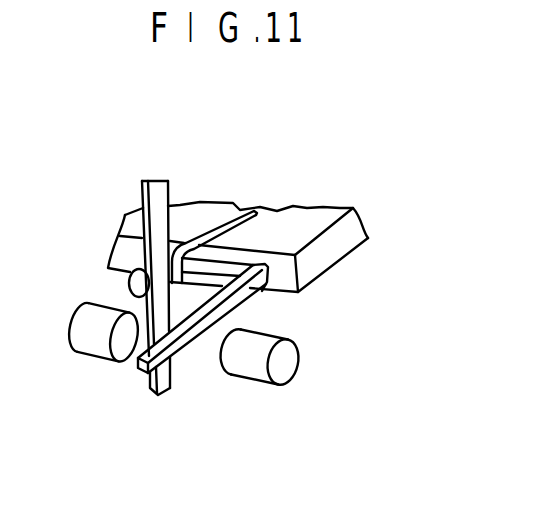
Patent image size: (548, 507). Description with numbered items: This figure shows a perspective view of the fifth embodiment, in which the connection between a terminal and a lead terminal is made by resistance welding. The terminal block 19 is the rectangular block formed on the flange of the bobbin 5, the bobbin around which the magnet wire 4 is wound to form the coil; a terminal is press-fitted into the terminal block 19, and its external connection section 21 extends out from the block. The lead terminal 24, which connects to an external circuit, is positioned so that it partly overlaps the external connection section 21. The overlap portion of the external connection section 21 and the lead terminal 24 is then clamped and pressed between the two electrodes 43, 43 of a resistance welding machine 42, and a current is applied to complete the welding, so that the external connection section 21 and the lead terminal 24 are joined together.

The magnet wire 4 is at (233, 212).
The bobbin 5 is at (300, 228).
The terminal block 19 is at (280, 208).
The external connection section 21 is at (202, 327).
The lead terminal 24 is at (146, 201).
The resistance welding machine 42 is at (267, 390).
The electrode 43 is at (95, 343).